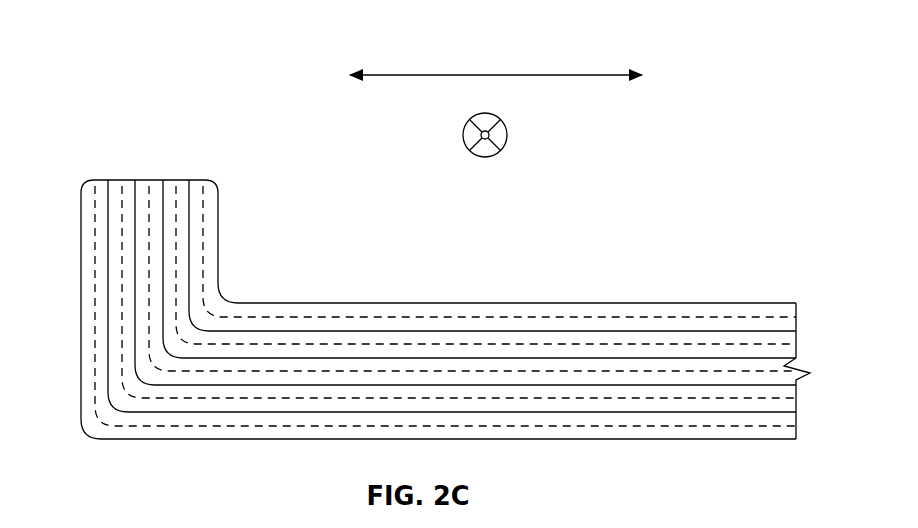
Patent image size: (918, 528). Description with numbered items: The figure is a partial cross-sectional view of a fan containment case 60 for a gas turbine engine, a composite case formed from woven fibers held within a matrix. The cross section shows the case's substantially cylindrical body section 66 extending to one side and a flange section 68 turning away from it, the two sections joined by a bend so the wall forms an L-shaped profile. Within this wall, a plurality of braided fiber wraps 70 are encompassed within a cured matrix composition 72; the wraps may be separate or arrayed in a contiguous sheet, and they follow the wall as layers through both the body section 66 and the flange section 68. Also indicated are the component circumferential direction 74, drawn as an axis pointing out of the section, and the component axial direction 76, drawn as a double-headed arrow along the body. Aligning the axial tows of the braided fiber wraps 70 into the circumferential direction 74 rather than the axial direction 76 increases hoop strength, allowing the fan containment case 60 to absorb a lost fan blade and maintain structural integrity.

The fan containment case 60 is at (688, 142).
The body section 66 is at (593, 268).
The flange section 68 is at (231, 168).
The braided fiber wraps 70 is at (148, 180).
The cured matrix composition 72 is at (332, 310).
The component circumferential direction 74 is at (507, 135).
The component axial direction 76 is at (474, 75).